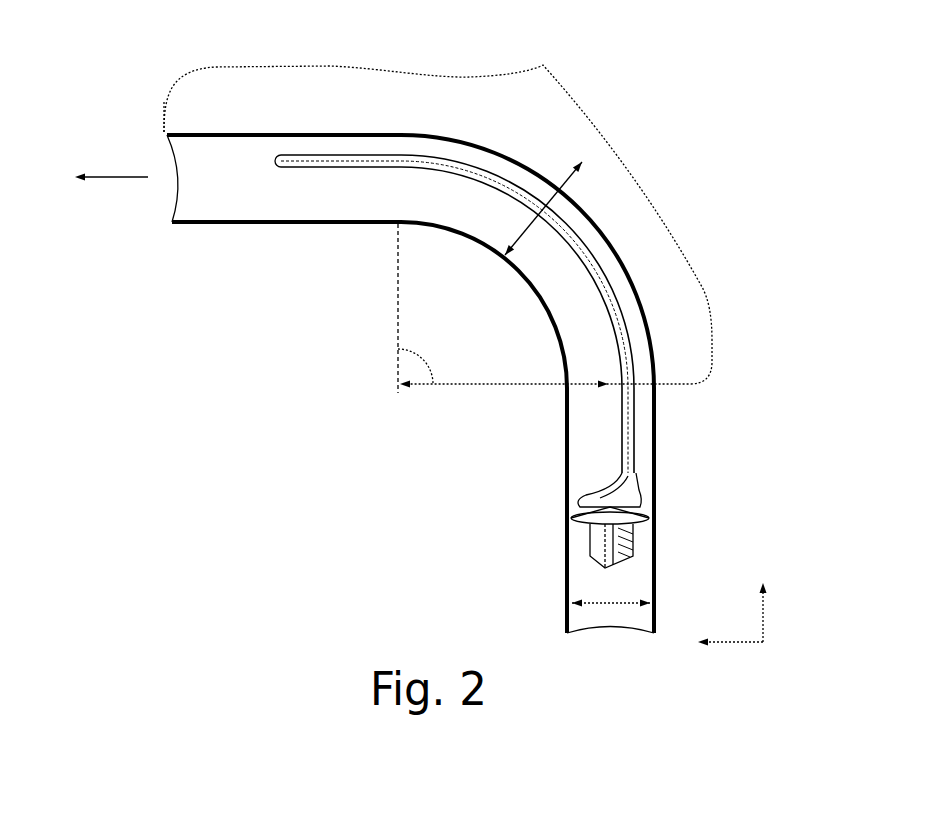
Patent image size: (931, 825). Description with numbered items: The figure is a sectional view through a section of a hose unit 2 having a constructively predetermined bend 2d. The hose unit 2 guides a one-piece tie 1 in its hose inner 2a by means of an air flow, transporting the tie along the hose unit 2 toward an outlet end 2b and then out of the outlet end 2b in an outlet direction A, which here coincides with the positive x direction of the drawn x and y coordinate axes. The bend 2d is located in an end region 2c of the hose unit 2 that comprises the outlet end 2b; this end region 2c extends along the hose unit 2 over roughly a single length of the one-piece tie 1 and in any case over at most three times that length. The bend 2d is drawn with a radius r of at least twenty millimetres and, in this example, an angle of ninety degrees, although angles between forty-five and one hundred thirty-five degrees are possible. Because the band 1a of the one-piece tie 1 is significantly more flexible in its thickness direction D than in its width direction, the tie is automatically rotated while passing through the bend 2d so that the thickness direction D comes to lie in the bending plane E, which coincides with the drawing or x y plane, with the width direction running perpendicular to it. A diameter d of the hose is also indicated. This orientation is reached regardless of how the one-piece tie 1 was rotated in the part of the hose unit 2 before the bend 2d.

The one-piece tie 1 is at (590, 502).
The band 1a is at (622, 298).
The hose unit 2 is at (368, 132).
The hose inner 2a is at (241, 201).
The outlet end 2b is at (157, 124).
The end region 2c is at (438, 211).
The constructively predetermined bend 2d is at (425, 232).
The outlet direction A is at (108, 178).
The thickness direction D is at (565, 184).
The bending plane E is at (749, 189).
The radius r is at (492, 386).
The pipe diameter d is at (627, 603).
The x-direction x is at (722, 643).
The y direction y is at (765, 592).